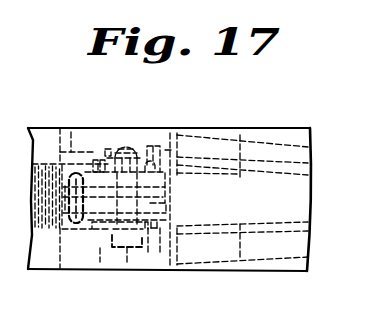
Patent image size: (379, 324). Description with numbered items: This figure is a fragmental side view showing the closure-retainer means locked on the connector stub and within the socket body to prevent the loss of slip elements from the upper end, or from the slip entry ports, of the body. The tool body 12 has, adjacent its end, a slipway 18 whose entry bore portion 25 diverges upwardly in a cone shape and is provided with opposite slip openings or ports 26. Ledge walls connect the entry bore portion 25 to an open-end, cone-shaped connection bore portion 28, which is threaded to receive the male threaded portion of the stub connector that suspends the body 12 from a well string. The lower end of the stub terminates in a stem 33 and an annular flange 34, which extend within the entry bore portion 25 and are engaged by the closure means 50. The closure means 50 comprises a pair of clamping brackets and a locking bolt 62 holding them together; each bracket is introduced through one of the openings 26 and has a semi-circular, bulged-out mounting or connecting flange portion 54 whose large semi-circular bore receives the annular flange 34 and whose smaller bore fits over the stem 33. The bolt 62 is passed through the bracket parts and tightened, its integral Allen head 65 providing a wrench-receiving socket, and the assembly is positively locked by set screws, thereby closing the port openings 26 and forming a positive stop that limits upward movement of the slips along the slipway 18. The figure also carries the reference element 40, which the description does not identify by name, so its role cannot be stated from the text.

The tool body 12 is at (228, 128).
The slipway 18 is at (275, 152).
The entry bore portion 25 is at (99, 160).
The slip openings or ports 26 is at (142, 142).
The connection bore portion 28 is at (48, 229).
The stem 33 is at (68, 225).
The annular flange 34 is at (74, 224).
The ports 40 is at (188, 175).
The closure means 50 is at (92, 162).
The mounting or connecting flange portion 54 is at (71, 132).
The locking bolt 62 is at (127, 144).
The Allen head 65 is at (126, 262).